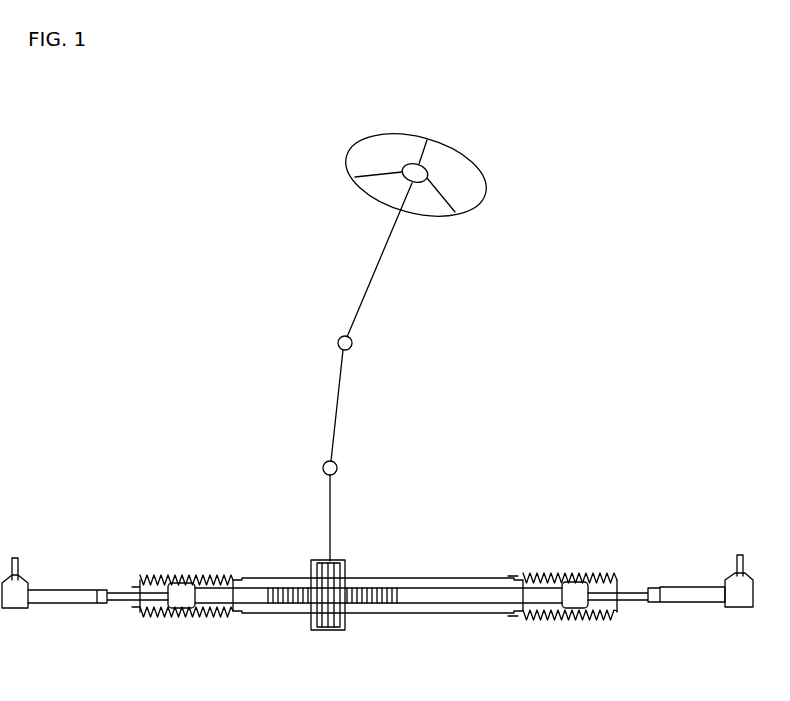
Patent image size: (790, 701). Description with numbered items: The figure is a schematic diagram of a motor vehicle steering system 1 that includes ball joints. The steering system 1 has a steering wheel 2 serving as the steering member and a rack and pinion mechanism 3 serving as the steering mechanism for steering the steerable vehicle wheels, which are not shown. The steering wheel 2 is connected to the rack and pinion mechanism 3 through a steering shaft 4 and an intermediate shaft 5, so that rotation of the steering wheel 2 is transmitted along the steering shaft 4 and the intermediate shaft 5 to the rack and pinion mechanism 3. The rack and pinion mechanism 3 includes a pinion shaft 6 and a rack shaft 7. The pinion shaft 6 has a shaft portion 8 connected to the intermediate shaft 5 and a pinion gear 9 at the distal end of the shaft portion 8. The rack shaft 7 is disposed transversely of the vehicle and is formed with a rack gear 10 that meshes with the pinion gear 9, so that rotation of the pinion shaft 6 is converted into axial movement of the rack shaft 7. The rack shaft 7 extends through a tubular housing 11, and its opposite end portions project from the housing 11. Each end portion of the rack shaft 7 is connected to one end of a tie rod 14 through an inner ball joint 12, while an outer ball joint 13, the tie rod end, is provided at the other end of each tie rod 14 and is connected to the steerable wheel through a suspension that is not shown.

The steering system 1 is at (212, 188).
The steering wheel 2 is at (388, 132).
The rack and pinion mechanism 3 is at (430, 535).
The steering shaft 4 is at (383, 260).
The intermediate shaft 5 is at (337, 401).
The pinion shaft 6 is at (327, 505).
The rack shaft 7 is at (450, 606).
The shaft portion 8 is at (332, 530).
The pinion gear 9 is at (337, 628).
The rack gear 10 is at (292, 599).
The tubular housing 11 is at (473, 580).
The inner ball joint 12 is at (183, 600).
The outer ball joint 13 is at (15, 600).
The tie rod 14 is at (80, 590).